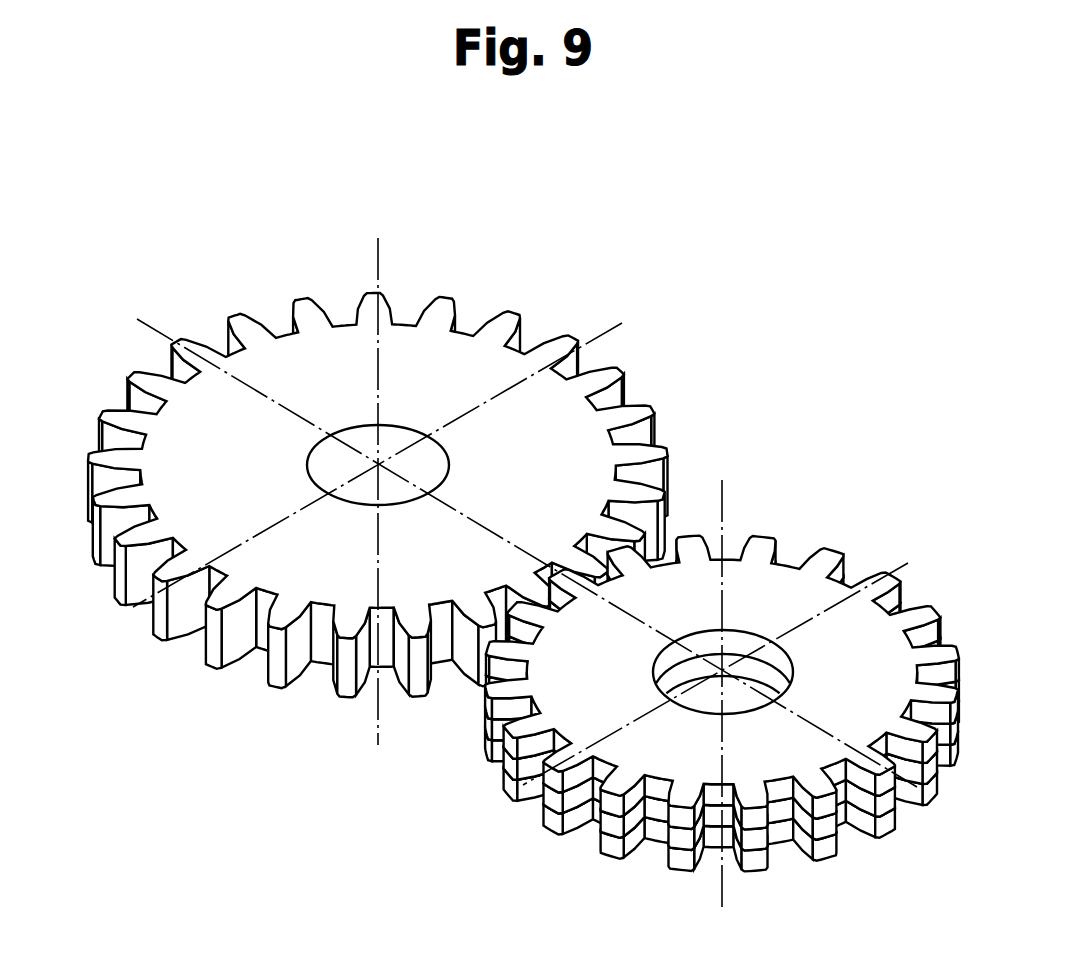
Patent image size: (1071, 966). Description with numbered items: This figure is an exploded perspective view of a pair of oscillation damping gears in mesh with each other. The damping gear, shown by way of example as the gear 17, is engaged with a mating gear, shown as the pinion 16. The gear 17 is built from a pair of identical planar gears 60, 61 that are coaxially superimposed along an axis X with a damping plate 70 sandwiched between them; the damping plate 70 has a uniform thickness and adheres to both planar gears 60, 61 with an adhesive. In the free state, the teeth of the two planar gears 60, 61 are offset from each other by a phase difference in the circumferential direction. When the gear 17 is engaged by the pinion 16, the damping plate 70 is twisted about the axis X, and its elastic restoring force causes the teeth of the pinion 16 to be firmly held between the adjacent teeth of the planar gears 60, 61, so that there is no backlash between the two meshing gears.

The pinion 16 is at (520, 291).
The gear 17 is at (724, 683).
The first planar gear 60 is at (765, 592).
The second planar gear 61 is at (632, 853).
The damping plate 70 is at (782, 808).
The axis X is at (722, 515).